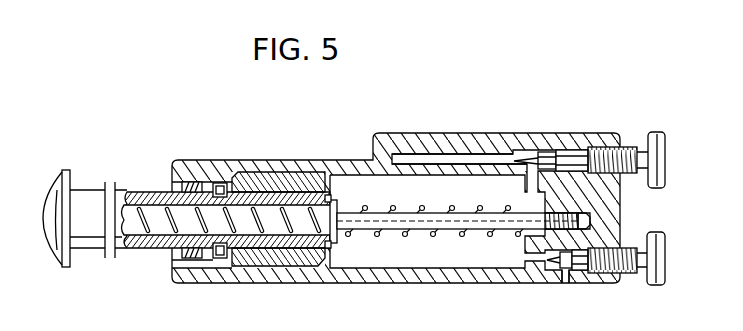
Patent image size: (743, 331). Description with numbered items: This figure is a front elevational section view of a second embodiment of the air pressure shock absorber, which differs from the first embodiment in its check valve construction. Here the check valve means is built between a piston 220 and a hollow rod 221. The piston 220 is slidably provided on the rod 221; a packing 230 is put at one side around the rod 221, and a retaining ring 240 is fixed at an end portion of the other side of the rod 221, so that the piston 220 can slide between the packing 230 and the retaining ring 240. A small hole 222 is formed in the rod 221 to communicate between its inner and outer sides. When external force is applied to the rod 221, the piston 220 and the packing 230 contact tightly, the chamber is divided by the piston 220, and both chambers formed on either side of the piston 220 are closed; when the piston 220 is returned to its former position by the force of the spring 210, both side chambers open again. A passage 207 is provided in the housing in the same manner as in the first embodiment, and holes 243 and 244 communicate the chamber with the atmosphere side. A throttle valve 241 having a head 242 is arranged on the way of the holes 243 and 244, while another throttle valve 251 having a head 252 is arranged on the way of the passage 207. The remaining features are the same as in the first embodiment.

The passage 207 is at (418, 158).
The spring 210 is at (335, 227).
The piston 220 is at (275, 172).
The rod 221 is at (142, 191).
The small hole 222 is at (231, 196).
The packing 230 is at (212, 182).
The retaining ring 240 is at (329, 197).
The throttle valve 241 is at (583, 268).
The head 242 is at (660, 262).
The hole 243 is at (548, 263).
The hole 244 is at (568, 280).
The throttle valve 251 is at (544, 157).
The head 252 is at (660, 157).